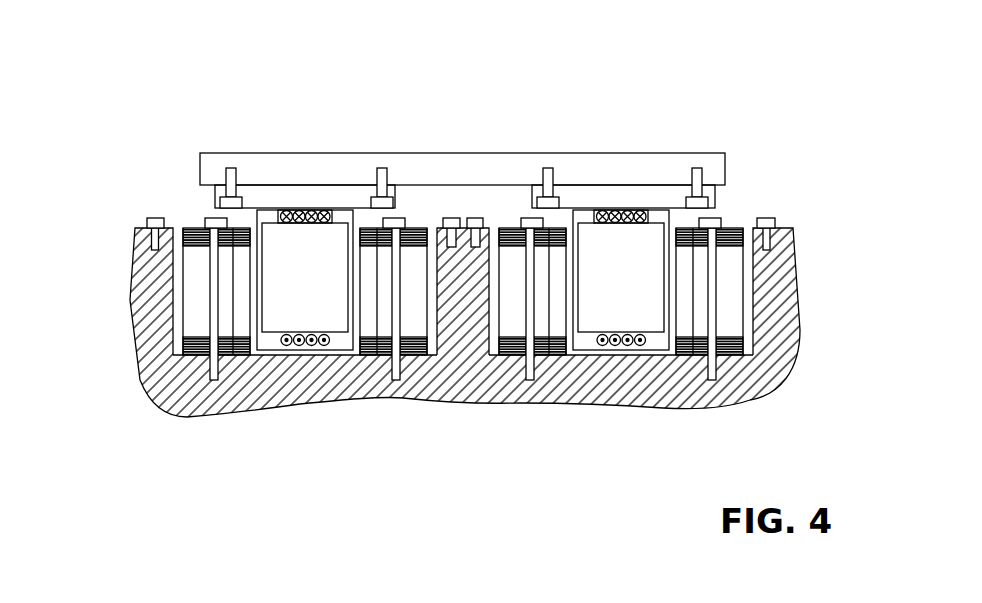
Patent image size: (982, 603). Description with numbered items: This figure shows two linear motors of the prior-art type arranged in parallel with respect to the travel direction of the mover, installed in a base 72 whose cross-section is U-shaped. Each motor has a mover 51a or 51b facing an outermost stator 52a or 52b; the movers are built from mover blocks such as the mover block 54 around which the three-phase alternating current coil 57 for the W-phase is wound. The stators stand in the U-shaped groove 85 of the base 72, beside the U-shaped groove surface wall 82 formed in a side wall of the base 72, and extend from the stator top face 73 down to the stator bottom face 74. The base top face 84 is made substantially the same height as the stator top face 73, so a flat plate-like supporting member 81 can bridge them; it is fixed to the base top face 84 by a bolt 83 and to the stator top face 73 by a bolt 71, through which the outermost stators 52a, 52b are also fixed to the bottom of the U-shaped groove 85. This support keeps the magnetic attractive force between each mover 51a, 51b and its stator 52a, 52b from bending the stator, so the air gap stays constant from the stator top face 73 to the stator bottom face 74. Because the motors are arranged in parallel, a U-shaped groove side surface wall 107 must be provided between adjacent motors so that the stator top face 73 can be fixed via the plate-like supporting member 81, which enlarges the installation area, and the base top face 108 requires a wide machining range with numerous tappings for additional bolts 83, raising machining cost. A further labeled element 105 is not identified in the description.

The mover 51a is at (624, 184).
The mover 51b is at (296, 184).
The outermost stator 52a is at (356, 250).
The outermost stator 52b is at (200, 273).
The mover block 54 is at (643, 265).
The three-phase alternating current coil 57 is at (582, 222).
The bolt 71 is at (733, 224).
The base 72 is at (708, 398).
The stator top face 73 is at (682, 228).
The stator bottom face 74 is at (684, 405).
The plate-like supporting member 81 is at (748, 224).
The U-shaped groove surface wall 82 is at (148, 293).
The bolt 83 is at (475, 225).
The base top face 84 is at (783, 229).
The U-shaped groove 85 is at (432, 357).
The fastening screw 105 is at (480, 217).
The U-shaped groove side surface wall 107 is at (452, 272).
The base top face 108 is at (460, 222).